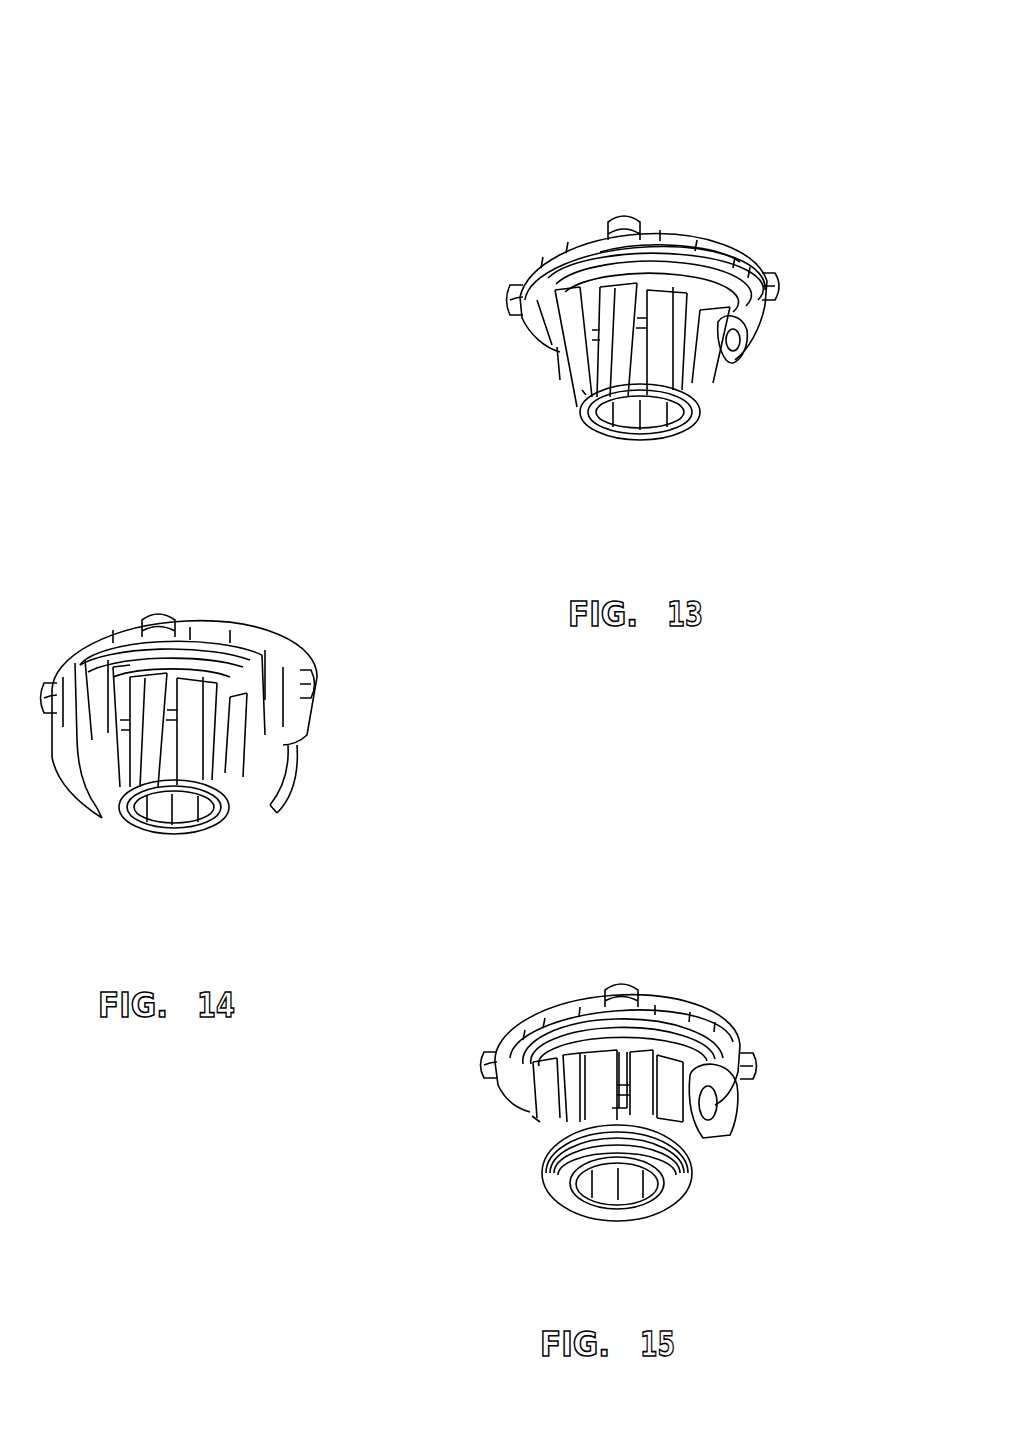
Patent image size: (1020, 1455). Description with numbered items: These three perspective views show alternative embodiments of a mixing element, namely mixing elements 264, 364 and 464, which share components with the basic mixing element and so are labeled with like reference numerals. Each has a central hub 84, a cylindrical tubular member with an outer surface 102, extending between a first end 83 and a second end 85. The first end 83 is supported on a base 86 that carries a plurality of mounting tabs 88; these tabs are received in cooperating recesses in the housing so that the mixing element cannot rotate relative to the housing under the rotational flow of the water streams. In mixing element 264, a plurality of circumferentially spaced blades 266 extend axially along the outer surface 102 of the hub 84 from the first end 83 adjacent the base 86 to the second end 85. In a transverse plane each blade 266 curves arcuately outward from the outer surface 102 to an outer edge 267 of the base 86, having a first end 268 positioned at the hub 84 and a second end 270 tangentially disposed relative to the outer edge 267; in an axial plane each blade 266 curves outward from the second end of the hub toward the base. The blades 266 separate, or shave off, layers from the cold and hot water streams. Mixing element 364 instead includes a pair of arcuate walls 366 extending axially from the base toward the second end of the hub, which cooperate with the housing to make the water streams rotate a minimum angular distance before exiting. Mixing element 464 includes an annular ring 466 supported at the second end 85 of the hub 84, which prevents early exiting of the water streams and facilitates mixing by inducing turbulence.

In FIG. 13, the mixing element 264 is at (605, 143).
In FIG. 14, the mixing element 364 is at (271, 520).
In FIG. 15, the mixing element 464 is at (683, 924).
In FIG. 13, the first end 83 is at (615, 290).
In FIG. 13, the base 86 is at (540, 257).
In FIG. 14, the base 86 is at (110, 630).
In FIG. 15, the base 86 is at (710, 1023).
In FIG. 13, the mounting tabs 88 is at (784, 288).
In FIG. 14, the mounting tabs 88 is at (153, 613).
In FIG. 15, the mounting tabs 88 is at (763, 1065).
In FIG. 13, the second end 270 is at (668, 240).
In FIG. 13, the outer edge 267 is at (712, 250).
In FIG. 13, the blades 266 is at (582, 390).
In FIG. 15, the blades 266 is at (532, 1116).
In FIG. 13, the first end 268 is at (597, 422).
In FIG. 13, the central hub 84 is at (683, 423).
In FIG. 14, the central hub 84 is at (200, 833).
In FIG. 15, the central hub 84 is at (537, 1135).
In FIG. 13, the second end 85 is at (625, 440).
In FIG. 14, the second end 85 is at (132, 825).
In FIG. 15, the second end 85 is at (697, 1170).
In FIG. 13, the outer surface 102 is at (642, 366).
In FIG. 14, the arcuate walls 366 is at (298, 740).
In FIG. 15, the annular ring 466 is at (562, 1190).